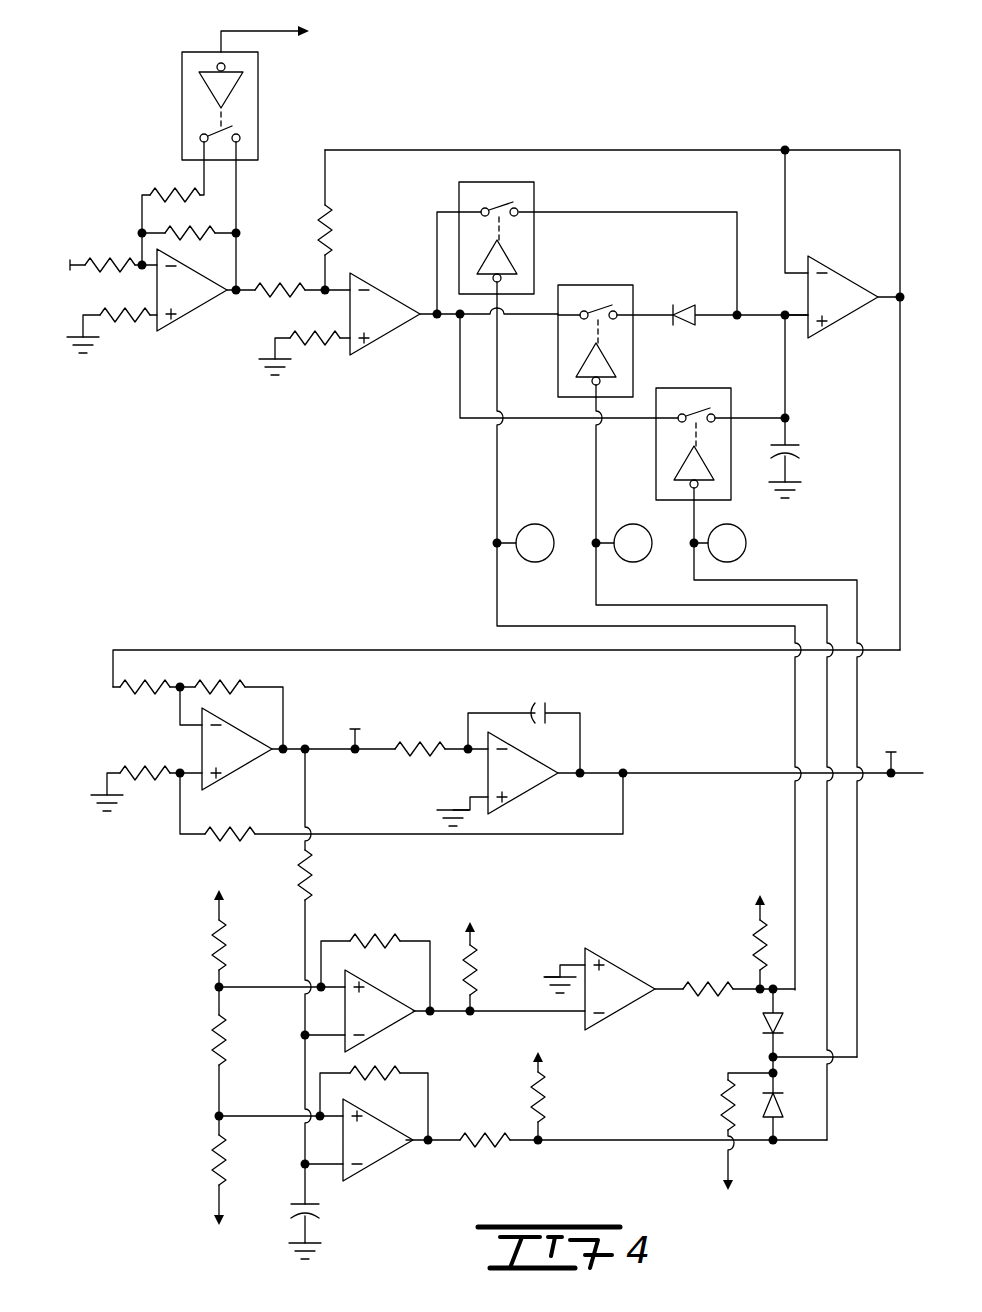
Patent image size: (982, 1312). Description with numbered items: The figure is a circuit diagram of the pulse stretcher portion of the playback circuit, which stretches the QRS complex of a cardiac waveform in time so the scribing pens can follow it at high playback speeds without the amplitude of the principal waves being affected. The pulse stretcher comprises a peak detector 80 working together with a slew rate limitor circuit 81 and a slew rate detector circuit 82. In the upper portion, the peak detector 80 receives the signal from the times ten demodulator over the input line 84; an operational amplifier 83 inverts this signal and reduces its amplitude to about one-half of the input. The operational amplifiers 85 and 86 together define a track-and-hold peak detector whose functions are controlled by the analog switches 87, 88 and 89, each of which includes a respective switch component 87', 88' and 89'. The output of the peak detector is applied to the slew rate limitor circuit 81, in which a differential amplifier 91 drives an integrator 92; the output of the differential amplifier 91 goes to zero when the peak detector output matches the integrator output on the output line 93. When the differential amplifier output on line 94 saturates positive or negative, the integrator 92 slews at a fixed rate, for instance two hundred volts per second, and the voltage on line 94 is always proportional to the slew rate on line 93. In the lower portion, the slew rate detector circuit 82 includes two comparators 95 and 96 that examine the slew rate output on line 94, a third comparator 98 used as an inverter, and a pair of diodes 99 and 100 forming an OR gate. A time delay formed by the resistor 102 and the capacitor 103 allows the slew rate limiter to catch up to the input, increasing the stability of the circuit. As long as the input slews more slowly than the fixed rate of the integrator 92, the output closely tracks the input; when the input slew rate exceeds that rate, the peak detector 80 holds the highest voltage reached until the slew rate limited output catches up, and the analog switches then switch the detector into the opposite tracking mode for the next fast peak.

The peak detector 80 is at (425, 393).
The slew rate limitor circuit 81 is at (148, 640).
The slew rate detector circuit 82 is at (202, 1014).
The operational amplifier 83 is at (185, 326).
The input line 84 is at (78, 263).
The operational amplifier 85 is at (383, 333).
The operational amplifier 86 is at (840, 320).
The analog switch 87 is at (647, 757).
The analog switch 88 is at (713, 832).
The analog switch 89 is at (777, 790).
The switch component 87' is at (598, 358).
The switch component 88' is at (683, 396).
The switch component 89' is at (728, 429).
The differential amplifier 91 is at (172, 741).
The integrator 92 is at (497, 733).
The output line 93 is at (893, 760).
The line 94 is at (357, 738).
The comparator 95 is at (388, 1023).
The comparator 96 is at (378, 1160).
The third comparator 98 is at (616, 967).
The diode 99 is at (762, 1019).
The diode 100 is at (784, 1110).
The resistor 102 is at (313, 872).
The capacitor 103 is at (318, 1212).